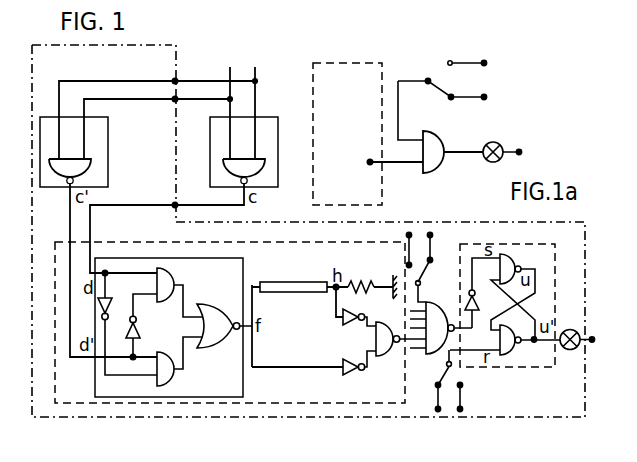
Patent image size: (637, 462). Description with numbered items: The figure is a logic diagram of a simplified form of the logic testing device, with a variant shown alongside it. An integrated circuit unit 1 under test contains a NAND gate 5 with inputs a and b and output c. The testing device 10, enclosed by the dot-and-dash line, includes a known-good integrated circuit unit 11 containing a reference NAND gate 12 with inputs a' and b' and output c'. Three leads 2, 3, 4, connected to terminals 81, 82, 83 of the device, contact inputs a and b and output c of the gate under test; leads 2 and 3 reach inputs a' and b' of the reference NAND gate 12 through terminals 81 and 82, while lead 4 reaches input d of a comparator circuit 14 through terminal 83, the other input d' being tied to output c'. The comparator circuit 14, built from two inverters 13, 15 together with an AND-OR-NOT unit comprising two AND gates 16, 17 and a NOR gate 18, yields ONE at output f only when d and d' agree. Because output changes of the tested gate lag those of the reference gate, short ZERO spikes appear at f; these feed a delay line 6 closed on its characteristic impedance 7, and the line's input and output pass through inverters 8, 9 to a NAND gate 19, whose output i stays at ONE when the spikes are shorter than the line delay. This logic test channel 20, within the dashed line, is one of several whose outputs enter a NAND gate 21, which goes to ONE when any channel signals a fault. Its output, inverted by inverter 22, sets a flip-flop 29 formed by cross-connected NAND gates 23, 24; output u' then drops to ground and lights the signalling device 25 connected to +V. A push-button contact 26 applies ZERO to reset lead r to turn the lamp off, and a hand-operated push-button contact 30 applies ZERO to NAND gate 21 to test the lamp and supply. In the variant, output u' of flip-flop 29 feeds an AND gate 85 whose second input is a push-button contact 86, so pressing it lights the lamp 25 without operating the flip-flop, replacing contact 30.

In FIG. 1, the integrated circuit unit 1 is at (251, 153).
In FIG. 1, the lead 2 is at (200, 83).
In FIG. 1, the lead 3 is at (205, 100).
In FIG. 1, the lead 4 is at (204, 209).
In FIG. 1, the NAND gate 5 is at (250, 180).
In FIG. 1, the delay line 6 is at (283, 283).
In FIG. 1, the characteristic impedance 7 is at (351, 287).
In FIG. 1, the inverter 8 is at (343, 310).
In FIG. 1, the inverter 9 is at (346, 374).
In FIG. 1, the testing device 10 is at (281, 215).
In FIG. 1, the integrated circuit unit 11 is at (88, 153).
In FIG. 1, the NAND gate 12 is at (76, 180).
In FIG. 1, the inverter 13 is at (107, 301).
In FIG. 1, the comparator circuit 14 is at (243, 397).
In FIG. 1, the inverter 15 is at (136, 326).
In FIG. 1, the AND gate 16 is at (169, 280).
In FIG. 1, the AND gate 17 is at (168, 380).
In FIG. 1, the NOR gate 18 is at (215, 312).
In FIG. 1, the NAND gate 19 is at (378, 326).
In FIG. 1, the logic test channel 20 is at (311, 244).
In FIG. 1, the NAND gate 21 is at (432, 302).
In FIG. 1, the inverter 22 is at (482, 293).
In FIG. 1, the NAND gate 23 is at (510, 264).
In FIG. 1, the NAND gate 24 is at (511, 353).
In FIG. 1, the signalling device 25 is at (565, 350).
In FIG. 1A, the signalling device 25 is at (500, 142).
In FIG. 1, the push-button contact 26 is at (447, 366).
In FIG. 1, the flip-flop 29 is at (500, 244).
In FIG. 1A, the flip-flop 29 is at (352, 64).
In FIG. 1, the push-button contact 30 is at (423, 279).
In FIG. 1, the terminal 81 is at (175, 81).
In FIG. 1, the terminal 82 is at (174, 100).
In FIG. 1, the terminal 83 is at (175, 205).
In FIG. 1A, the AND gate 85 is at (440, 135).
In FIG. 1A, the push-button contact 86 is at (442, 92).